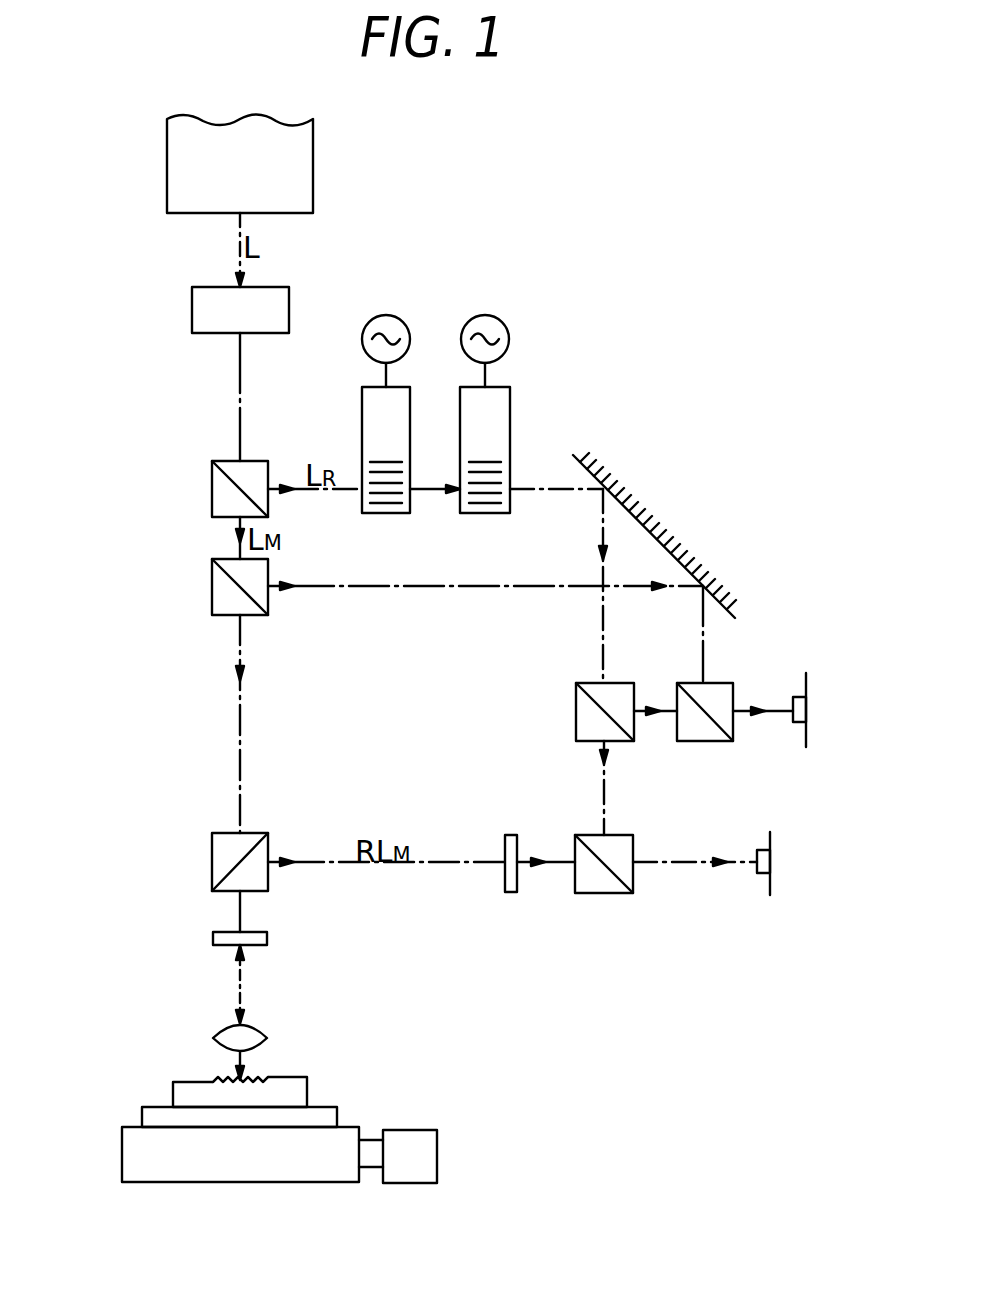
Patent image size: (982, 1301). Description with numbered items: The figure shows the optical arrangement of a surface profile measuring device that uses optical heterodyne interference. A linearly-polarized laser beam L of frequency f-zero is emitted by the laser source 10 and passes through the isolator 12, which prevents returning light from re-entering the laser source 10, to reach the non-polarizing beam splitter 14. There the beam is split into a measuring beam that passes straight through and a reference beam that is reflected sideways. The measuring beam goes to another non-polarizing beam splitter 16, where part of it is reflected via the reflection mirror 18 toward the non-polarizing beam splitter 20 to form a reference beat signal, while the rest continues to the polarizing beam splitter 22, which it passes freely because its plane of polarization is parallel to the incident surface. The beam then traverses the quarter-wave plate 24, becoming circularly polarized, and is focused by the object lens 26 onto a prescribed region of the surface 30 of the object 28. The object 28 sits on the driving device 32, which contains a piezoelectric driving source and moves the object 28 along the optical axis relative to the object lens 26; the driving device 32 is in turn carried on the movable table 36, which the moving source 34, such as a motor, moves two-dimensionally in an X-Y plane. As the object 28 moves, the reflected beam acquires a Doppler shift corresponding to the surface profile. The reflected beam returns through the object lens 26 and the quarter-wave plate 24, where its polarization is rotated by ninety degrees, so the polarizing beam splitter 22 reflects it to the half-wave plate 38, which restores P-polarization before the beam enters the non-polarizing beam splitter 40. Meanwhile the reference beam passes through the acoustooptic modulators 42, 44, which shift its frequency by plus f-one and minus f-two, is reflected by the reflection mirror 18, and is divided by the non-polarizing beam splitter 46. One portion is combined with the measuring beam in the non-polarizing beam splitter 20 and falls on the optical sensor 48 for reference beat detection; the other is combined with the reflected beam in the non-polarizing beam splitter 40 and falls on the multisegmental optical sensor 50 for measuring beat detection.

The laser source 10 is at (178, 144).
The isolator 12 is at (203, 300).
The non-polarizing beam splitter 14 is at (218, 490).
The non-polarizing beam splitter 16 is at (218, 590).
The reflection mirror 18 is at (575, 465).
The non-polarizing beam splitter 20 is at (703, 741).
The polarizing beam splitter 22 is at (218, 851).
The quarter-wave plate 24 is at (218, 938).
The object lens 26 is at (220, 1032).
The object 28 is at (180, 1082).
The surface 30 is at (262, 1078).
The driving device 32 is at (152, 1110).
The moving source 34 is at (418, 1133).
The movable table 36 is at (276, 1182).
The half-wave plate 38 is at (511, 893).
The non-polarizing beam splitter 40 is at (598, 893).
The acoustooptic modulator 42 is at (348, 366).
The acoustooptic modulator 44 is at (524, 382).
The non-polarizing beam splitter 46 is at (580, 705).
The optical sensor 48 is at (800, 697).
The multisegmental optical sensor 50 is at (752, 888).